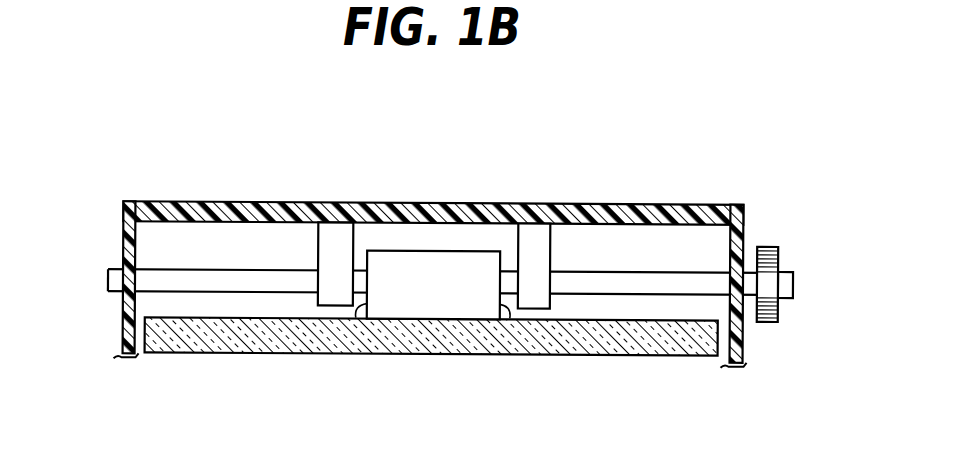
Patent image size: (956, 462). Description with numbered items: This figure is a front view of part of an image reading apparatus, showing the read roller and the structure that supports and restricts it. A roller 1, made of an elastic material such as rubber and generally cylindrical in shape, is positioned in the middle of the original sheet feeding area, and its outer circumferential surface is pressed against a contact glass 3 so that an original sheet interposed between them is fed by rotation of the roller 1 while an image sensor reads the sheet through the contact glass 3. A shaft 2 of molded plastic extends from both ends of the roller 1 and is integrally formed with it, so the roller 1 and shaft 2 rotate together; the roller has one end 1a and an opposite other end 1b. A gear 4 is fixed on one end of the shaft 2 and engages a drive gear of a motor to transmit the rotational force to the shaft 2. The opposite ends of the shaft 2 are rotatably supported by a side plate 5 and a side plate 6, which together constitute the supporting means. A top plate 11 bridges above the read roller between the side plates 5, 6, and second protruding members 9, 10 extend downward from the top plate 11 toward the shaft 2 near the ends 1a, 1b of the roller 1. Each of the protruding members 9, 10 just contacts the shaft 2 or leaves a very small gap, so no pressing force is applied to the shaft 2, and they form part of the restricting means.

The roller 1 is at (435, 302).
The end of the roller 1a is at (508, 312).
The other end of the roller 1b is at (357, 312).
The shaft 2 is at (247, 268).
The contact glass 3 is at (228, 355).
The gear 4 is at (767, 246).
The side plate 5 is at (743, 222).
The side plate 6 is at (124, 230).
The second protruding member 9 is at (538, 235).
The second protruding member 10 is at (332, 237).
The top plate 11 is at (424, 204).